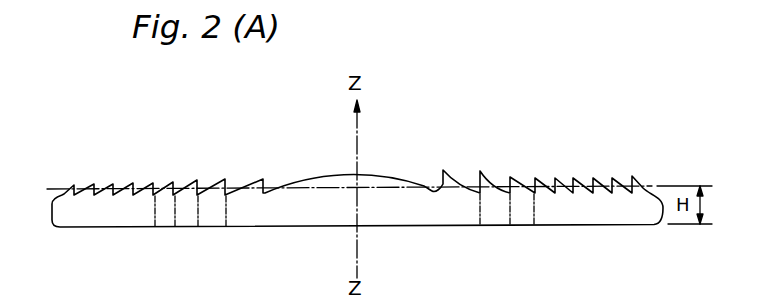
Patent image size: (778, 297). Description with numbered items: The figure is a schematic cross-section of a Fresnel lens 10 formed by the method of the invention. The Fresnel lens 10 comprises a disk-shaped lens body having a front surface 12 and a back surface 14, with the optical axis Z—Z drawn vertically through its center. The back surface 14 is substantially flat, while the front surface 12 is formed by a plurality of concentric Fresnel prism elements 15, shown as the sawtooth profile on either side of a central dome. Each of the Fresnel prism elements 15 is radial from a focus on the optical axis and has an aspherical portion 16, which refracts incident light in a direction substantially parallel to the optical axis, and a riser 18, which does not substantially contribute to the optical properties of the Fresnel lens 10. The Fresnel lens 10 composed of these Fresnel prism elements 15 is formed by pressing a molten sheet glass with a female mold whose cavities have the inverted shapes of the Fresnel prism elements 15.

The Fresnel lens 10 is at (413, 166).
The front surface 12 is at (92, 182).
The back surface 14 is at (88, 228).
The Fresnel prism elements 15 is at (163, 229).
The aspherical portion 16 is at (213, 184).
The riser 18 is at (199, 186).